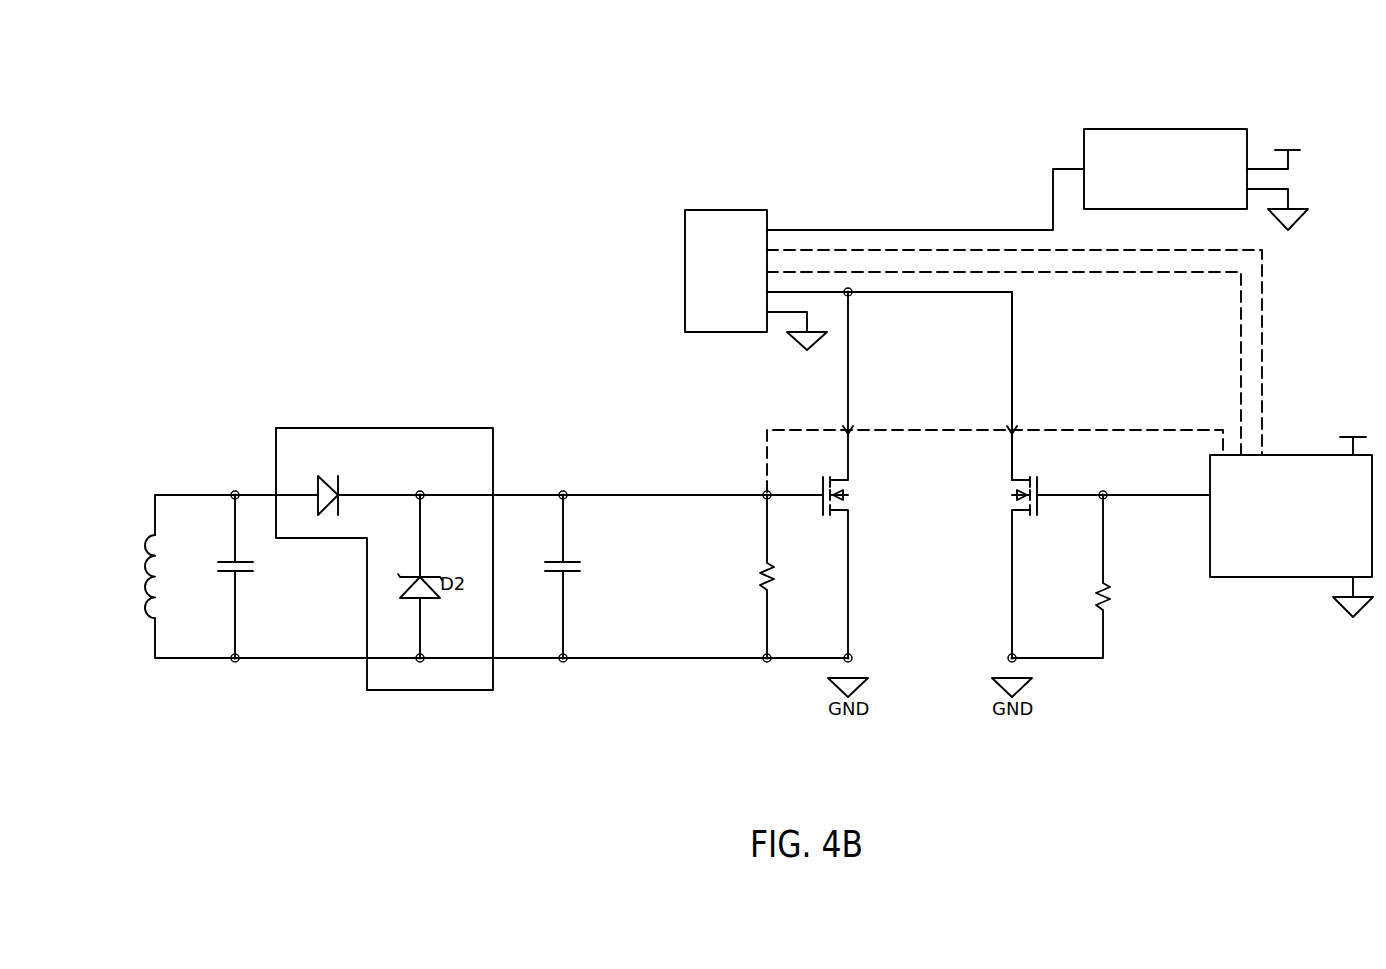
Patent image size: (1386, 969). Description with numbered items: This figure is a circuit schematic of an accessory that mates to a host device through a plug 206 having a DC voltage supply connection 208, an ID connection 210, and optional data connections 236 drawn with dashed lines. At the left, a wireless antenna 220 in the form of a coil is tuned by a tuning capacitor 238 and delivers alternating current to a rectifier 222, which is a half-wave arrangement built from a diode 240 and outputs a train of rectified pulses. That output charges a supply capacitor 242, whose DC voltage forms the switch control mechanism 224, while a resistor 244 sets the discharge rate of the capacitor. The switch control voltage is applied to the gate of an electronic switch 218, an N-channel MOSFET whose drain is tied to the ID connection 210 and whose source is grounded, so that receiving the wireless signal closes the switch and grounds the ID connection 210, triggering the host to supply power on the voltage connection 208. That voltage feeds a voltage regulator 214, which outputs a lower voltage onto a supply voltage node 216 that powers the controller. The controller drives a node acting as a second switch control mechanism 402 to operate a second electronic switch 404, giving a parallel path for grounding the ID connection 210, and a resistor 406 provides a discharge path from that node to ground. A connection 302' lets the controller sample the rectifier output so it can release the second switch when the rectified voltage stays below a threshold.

The plug 206 is at (715, 210).
The DC voltage supply connection 208 is at (945, 230).
The ID connection 210 is at (848, 408).
The voltage regulator 214 is at (1140, 129).
The supply voltage node 216 is at (1283, 157).
The electronic switch 218 is at (848, 510).
The wireless antenna 220 is at (150, 568).
The rectifier 222 is at (335, 428).
The switch control mechanism 224 is at (768, 490).
The data connections 236 is at (1073, 262).
The tuning capacitor 238 is at (218, 568).
The diode 240 is at (300, 487).
The supply capacitor 242 is at (548, 562).
The resistor 244 is at (765, 572).
The connection 302' is at (995, 444).
The second switch control mechanism 402 is at (1105, 498).
The second electronic switch 404 is at (1012, 505).
The resistor 406 is at (1100, 600).